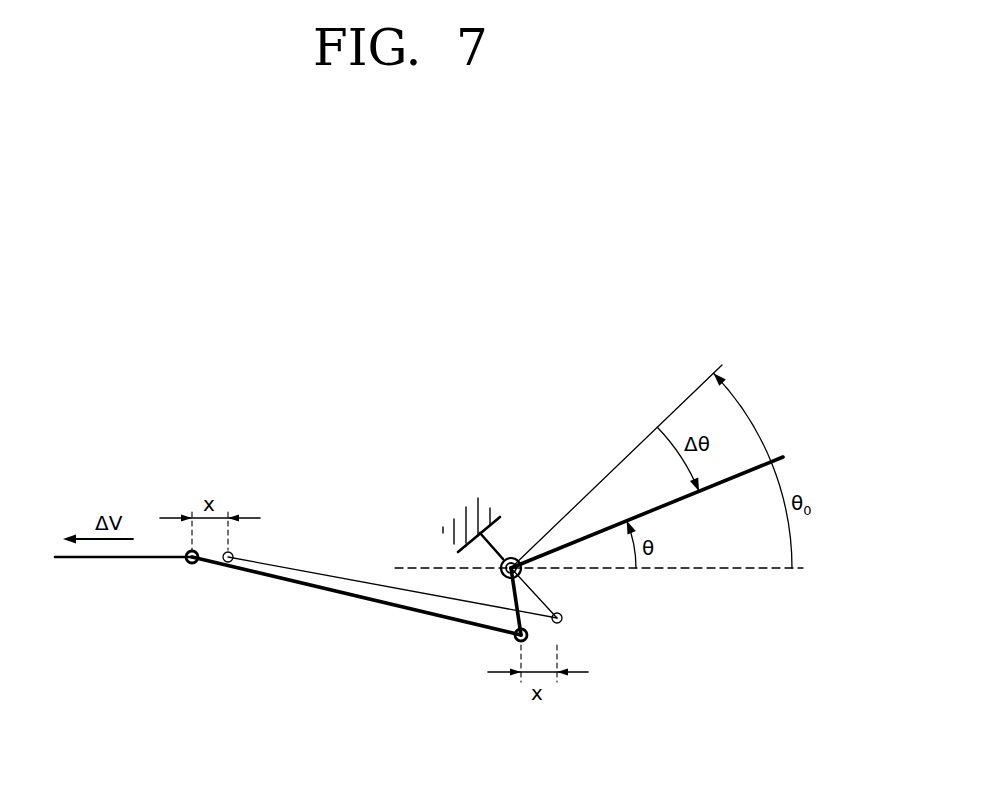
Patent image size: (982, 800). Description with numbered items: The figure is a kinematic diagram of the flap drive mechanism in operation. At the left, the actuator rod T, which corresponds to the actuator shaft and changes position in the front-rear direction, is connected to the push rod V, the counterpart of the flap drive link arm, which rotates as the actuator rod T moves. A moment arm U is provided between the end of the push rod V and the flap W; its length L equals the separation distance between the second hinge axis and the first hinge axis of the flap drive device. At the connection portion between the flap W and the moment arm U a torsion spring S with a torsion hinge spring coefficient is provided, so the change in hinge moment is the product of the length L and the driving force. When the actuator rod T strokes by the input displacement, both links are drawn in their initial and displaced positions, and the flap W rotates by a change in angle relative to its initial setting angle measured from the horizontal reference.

The actuator rod T is at (148, 557).
The push rod V is at (355, 597).
The moment arm U is at (509, 594).
The length of the moment arm L is at (536, 595).
The torsion spring S is at (513, 557).
The flap W is at (725, 482).